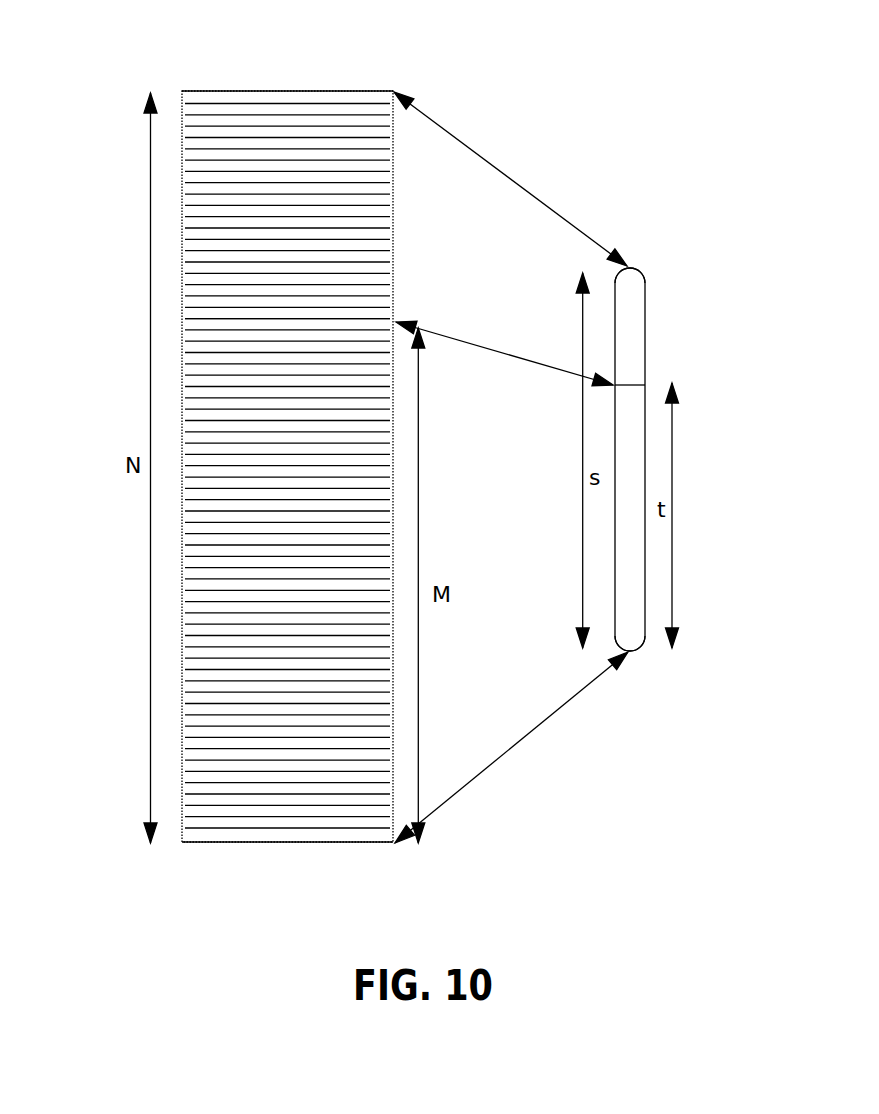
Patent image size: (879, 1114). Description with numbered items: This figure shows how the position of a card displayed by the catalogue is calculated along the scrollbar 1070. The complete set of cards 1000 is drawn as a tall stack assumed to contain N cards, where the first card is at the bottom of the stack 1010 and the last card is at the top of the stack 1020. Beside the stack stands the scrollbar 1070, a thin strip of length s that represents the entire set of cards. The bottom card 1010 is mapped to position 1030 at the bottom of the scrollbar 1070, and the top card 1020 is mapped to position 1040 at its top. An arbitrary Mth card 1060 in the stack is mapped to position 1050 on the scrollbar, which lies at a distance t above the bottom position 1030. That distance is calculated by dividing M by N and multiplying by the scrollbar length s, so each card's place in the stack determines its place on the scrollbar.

The complete set of cards 1000 is at (173, 373).
The bottom of the stack 1010 is at (340, 843).
The top of the stack 1020 is at (281, 89).
The position on the scrollbar corresponding to bottom card 1030 is at (632, 652).
The position on the scrollbar corresponding to top card 1040 is at (641, 259).
The position on the scrollbar corresponding to Mth card 1050 is at (646, 384).
The Mth card 1060 is at (395, 322).
The scrollbar 1070 is at (653, 430).